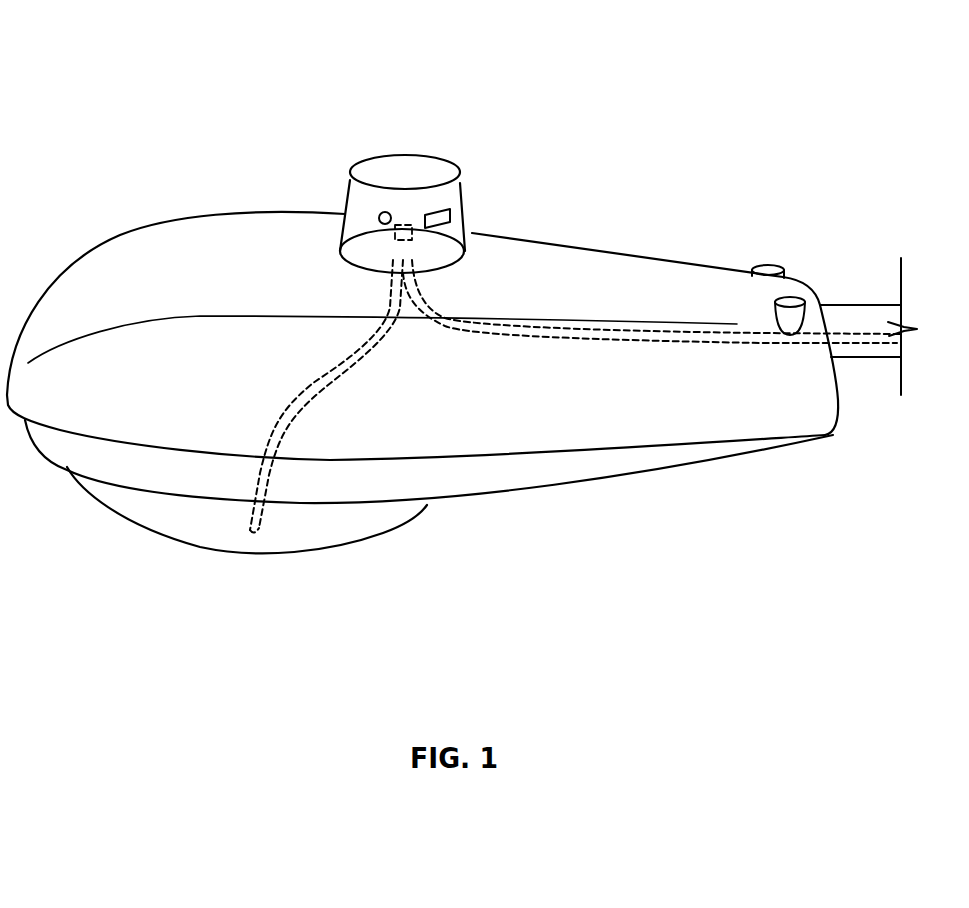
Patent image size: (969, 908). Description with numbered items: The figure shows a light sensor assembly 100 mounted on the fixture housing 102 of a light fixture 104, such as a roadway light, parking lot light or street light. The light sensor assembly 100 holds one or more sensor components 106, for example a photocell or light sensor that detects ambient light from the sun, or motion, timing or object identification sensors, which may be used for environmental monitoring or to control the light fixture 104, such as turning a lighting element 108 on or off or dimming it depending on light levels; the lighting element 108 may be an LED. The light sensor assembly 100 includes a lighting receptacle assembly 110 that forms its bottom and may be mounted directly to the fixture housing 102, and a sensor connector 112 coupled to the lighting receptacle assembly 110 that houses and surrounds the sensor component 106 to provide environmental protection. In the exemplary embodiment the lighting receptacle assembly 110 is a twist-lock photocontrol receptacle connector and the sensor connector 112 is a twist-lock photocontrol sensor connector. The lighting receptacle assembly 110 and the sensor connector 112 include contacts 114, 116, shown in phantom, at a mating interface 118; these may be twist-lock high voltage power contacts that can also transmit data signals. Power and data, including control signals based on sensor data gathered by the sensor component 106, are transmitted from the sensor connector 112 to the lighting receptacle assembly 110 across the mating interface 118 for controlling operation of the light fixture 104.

The light sensor assembly 100 is at (370, 46).
The fixture housing 102 is at (686, 298).
The light fixture 104 is at (606, 240).
The sensor component 106 is at (367, 202).
The lighting element 108 is at (142, 545).
The lighting receptacle assembly 110 is at (340, 247).
The sensor connector 112 is at (379, 211).
The contacts 114 is at (393, 240).
The contacts 116 is at (405, 225).
The mating interface 118 is at (480, 222).